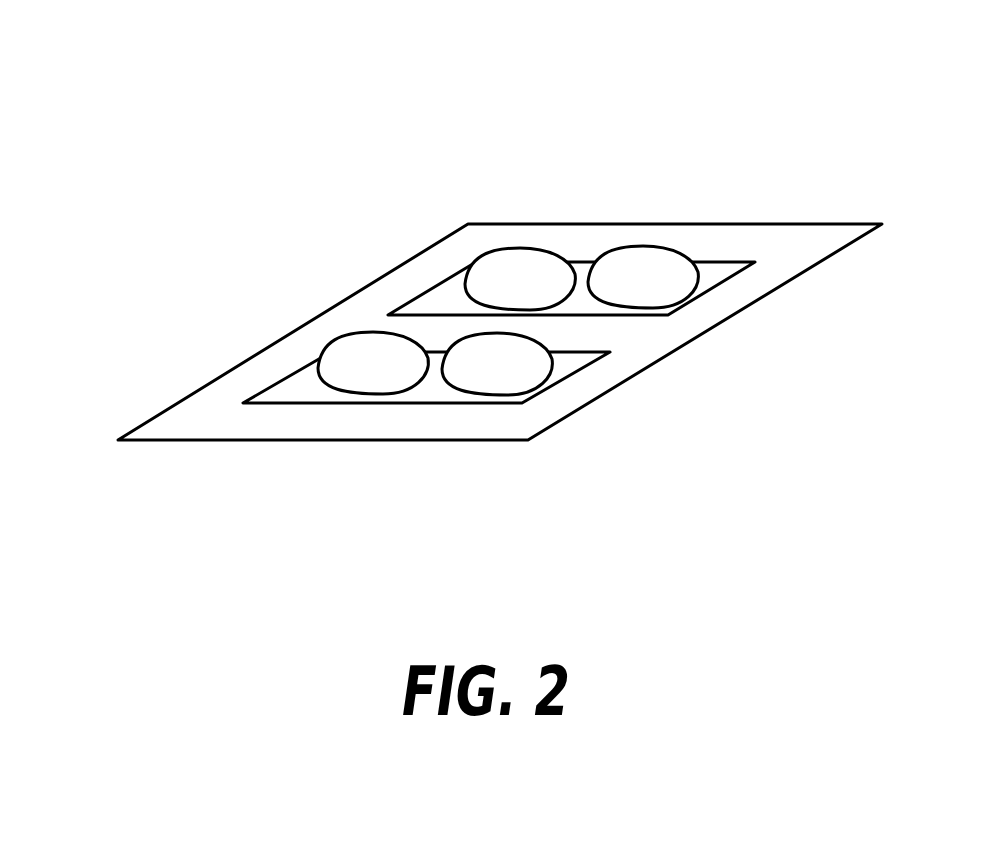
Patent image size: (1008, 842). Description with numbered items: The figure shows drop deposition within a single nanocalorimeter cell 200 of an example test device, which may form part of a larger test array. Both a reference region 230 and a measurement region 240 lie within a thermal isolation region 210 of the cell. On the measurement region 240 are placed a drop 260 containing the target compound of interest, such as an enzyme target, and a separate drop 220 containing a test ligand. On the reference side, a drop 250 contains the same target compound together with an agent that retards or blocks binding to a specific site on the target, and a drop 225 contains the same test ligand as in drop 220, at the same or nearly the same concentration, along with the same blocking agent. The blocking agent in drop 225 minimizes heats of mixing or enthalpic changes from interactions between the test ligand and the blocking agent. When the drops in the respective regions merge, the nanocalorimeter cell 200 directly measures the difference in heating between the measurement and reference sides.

The nanocalorimeter cell 200 is at (237, 109).
The thermal isolation region 210 is at (245, 383).
The drop with test ligand 220 is at (373, 350).
The drop with test ligand and blocking agent 225 is at (512, 268).
The reference region 230 is at (708, 270).
The measurement region 240 is at (302, 385).
The drop with target compound and blocking agent 250 is at (665, 282).
The drop with target compound 260 is at (532, 377).